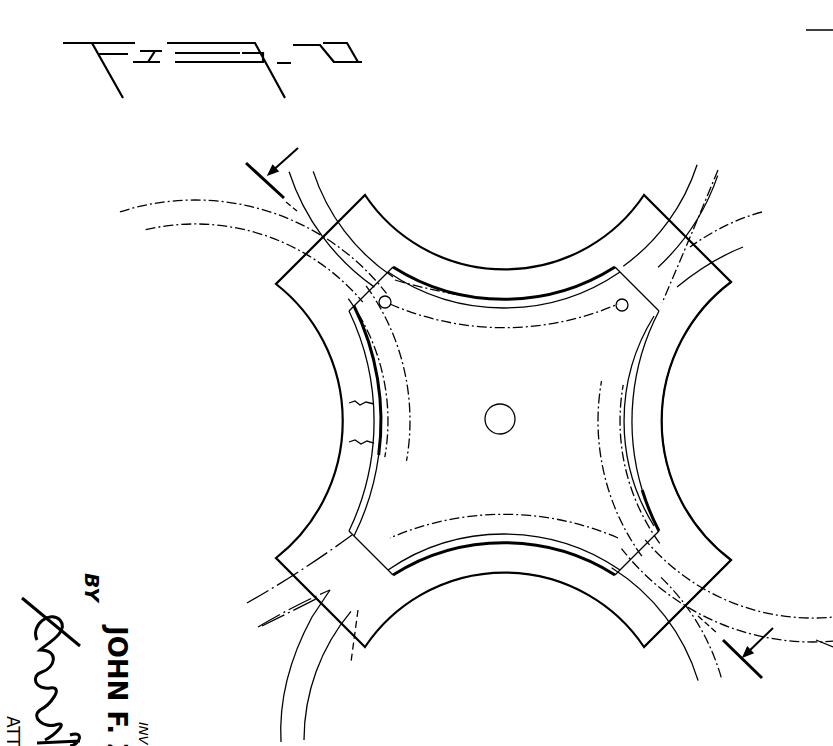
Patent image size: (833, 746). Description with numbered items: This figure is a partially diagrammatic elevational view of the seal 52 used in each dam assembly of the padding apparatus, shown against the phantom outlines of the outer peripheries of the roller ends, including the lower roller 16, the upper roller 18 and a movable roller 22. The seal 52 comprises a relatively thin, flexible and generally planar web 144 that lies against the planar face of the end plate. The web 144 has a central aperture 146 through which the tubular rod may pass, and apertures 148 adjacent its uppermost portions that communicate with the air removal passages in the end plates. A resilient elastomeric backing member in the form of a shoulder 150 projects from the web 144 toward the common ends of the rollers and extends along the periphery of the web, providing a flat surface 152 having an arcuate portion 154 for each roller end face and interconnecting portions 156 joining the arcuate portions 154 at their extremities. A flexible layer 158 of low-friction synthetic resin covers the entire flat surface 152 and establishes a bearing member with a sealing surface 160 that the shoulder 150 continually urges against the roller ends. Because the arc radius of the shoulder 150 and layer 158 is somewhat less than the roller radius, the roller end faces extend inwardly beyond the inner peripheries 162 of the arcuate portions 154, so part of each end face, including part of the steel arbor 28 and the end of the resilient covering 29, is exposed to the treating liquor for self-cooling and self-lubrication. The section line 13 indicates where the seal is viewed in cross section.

The section line 13- 13 is at (503, 417).
The lower roller 16 is at (280, 700).
The upper roller 18 is at (715, 197).
The movable roller 22 is at (152, 207).
The steel arbor 28 is at (302, 627).
The covering of resilient material 29 is at (313, 680).
The seal 52 is at (441, 250).
The web 144 is at (608, 431).
The central aperture 146 is at (509, 436).
The apertures 148 is at (390, 310).
The shoulder 150 is at (693, 520).
The flat surface 152 is at (704, 557).
The arcuate portion 154 is at (362, 422).
The interconnecting portions 156 is at (355, 649).
The layer of low-friction material 158 is at (517, 272).
The sealing surface 160 is at (598, 598).
The inner peripheries 162 is at (524, 303).